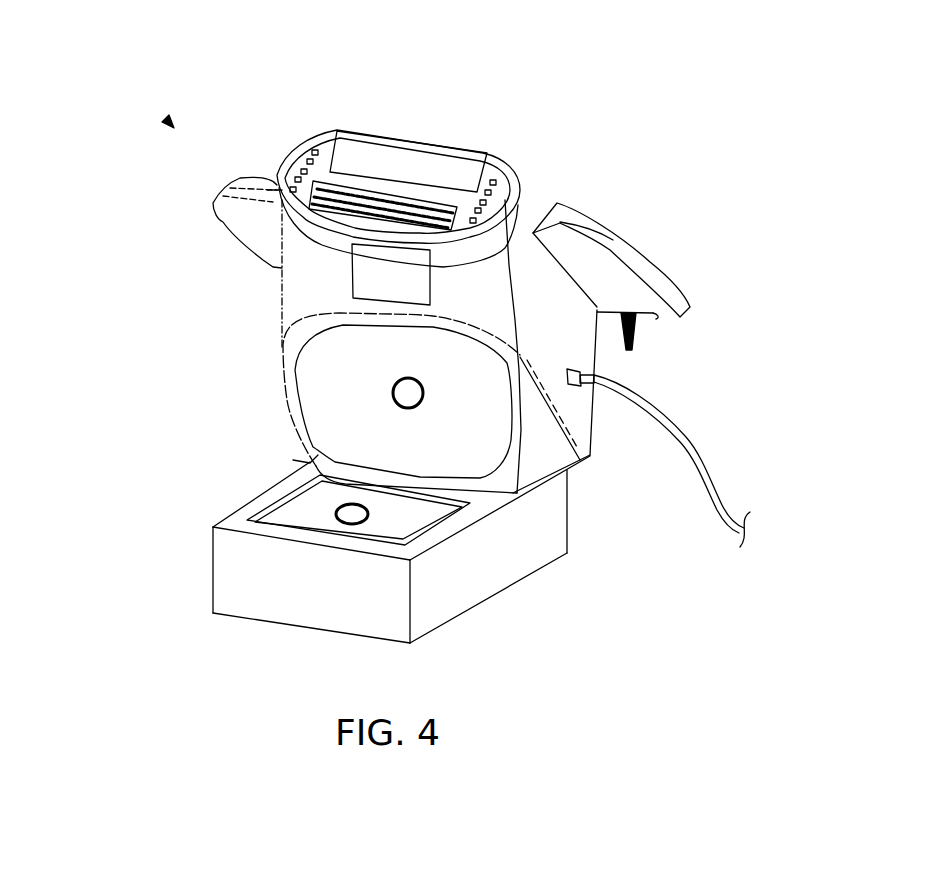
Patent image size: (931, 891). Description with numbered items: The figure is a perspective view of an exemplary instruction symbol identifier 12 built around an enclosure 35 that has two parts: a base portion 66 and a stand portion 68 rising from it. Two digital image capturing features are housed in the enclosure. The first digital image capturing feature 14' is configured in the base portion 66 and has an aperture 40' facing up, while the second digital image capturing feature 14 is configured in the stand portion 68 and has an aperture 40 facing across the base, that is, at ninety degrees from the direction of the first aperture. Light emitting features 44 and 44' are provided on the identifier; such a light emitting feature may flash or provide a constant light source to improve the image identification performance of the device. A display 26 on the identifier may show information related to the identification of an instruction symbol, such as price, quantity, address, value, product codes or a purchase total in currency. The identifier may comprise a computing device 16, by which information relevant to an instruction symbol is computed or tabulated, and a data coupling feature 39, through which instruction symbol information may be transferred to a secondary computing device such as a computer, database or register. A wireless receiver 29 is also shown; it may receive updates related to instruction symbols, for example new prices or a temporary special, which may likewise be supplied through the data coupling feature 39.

The instruction symbol identifier 12 is at (168, 122).
The display 26 is at (347, 153).
The computing device 16 is at (503, 200).
The wireless receiver 29 is at (387, 278).
The stand portion 68 is at (533, 307).
The aperture 40 is at (301, 326).
The second digital image capturing feature 14 is at (344, 385).
The light emitting feature 44 is at (338, 401).
The light emitting feature 44' is at (314, 487).
The base portion 66 is at (233, 560).
The enclosure 35 is at (280, 593).
The first digital image capturing feature 14' is at (358, 583).
The aperture 40' is at (466, 567).
The data coupling feature 39 is at (702, 454).